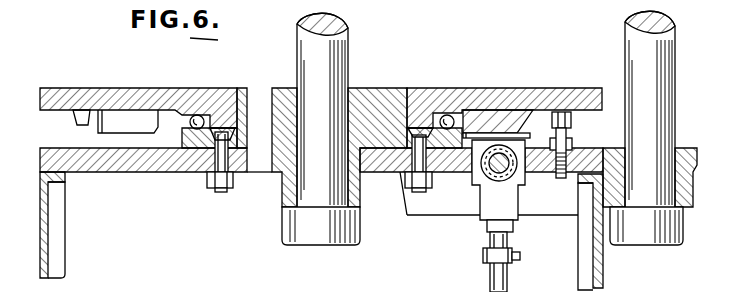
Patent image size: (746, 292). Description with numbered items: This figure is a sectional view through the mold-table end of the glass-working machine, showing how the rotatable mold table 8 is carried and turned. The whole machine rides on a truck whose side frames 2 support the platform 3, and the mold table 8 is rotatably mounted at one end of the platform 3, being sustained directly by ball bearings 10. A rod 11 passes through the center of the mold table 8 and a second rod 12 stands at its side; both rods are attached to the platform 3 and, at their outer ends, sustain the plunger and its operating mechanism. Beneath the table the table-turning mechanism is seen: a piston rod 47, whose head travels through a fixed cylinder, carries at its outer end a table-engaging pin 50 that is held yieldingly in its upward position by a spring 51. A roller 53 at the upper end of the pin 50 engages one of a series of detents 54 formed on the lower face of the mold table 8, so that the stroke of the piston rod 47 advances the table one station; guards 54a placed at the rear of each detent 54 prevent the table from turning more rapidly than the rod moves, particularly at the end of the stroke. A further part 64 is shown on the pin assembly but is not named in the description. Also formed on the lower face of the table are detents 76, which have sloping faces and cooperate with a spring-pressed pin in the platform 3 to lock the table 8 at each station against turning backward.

The side frames 2 is at (60, 247).
The platform 3 is at (697, 162).
The mold table 8 is at (58, 93).
The ball bearings 10 is at (198, 116).
The rod 11 is at (343, 50).
The rod 12 is at (660, 62).
The piston rod 47 is at (490, 172).
The table-engaging pin 50 is at (508, 238).
The spring 51 is at (516, 200).
The roller 53 is at (505, 135).
The detents 54 is at (503, 120).
The guards 54a is at (131, 126).
The collar 64 is at (486, 257).
The detents 76 is at (77, 118).